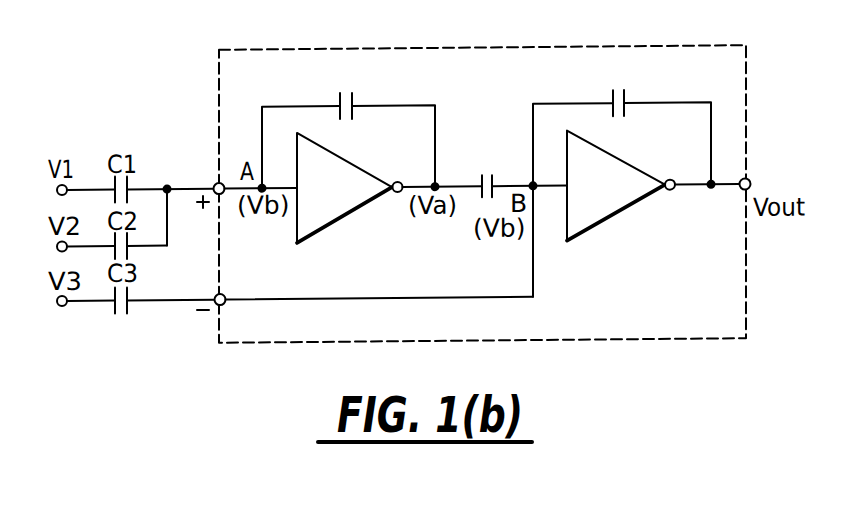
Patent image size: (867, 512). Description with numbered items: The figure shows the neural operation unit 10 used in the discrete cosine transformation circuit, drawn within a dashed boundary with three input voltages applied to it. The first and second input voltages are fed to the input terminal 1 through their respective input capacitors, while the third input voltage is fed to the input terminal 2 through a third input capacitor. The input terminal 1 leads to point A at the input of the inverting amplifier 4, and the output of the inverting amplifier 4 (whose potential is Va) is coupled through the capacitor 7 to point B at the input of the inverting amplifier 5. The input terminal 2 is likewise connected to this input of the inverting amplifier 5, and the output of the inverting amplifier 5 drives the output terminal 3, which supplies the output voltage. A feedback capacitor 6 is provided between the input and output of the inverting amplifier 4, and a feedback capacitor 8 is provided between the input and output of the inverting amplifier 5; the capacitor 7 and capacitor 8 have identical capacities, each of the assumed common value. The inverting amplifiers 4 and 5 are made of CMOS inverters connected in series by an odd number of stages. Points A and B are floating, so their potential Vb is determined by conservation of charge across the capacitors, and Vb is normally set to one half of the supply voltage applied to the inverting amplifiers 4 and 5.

The input terminal 1 is at (215, 186).
The input terminal 2 is at (216, 297).
The output terminal 3 is at (748, 185).
The inverting amplifier 4 is at (361, 172).
The inverting amplifier 5 is at (628, 169).
The capacitor 6 is at (349, 130).
The capacitor 7 is at (517, 172).
The capacitor 8 is at (624, 128).
The neural operation unit 10 is at (476, 178).